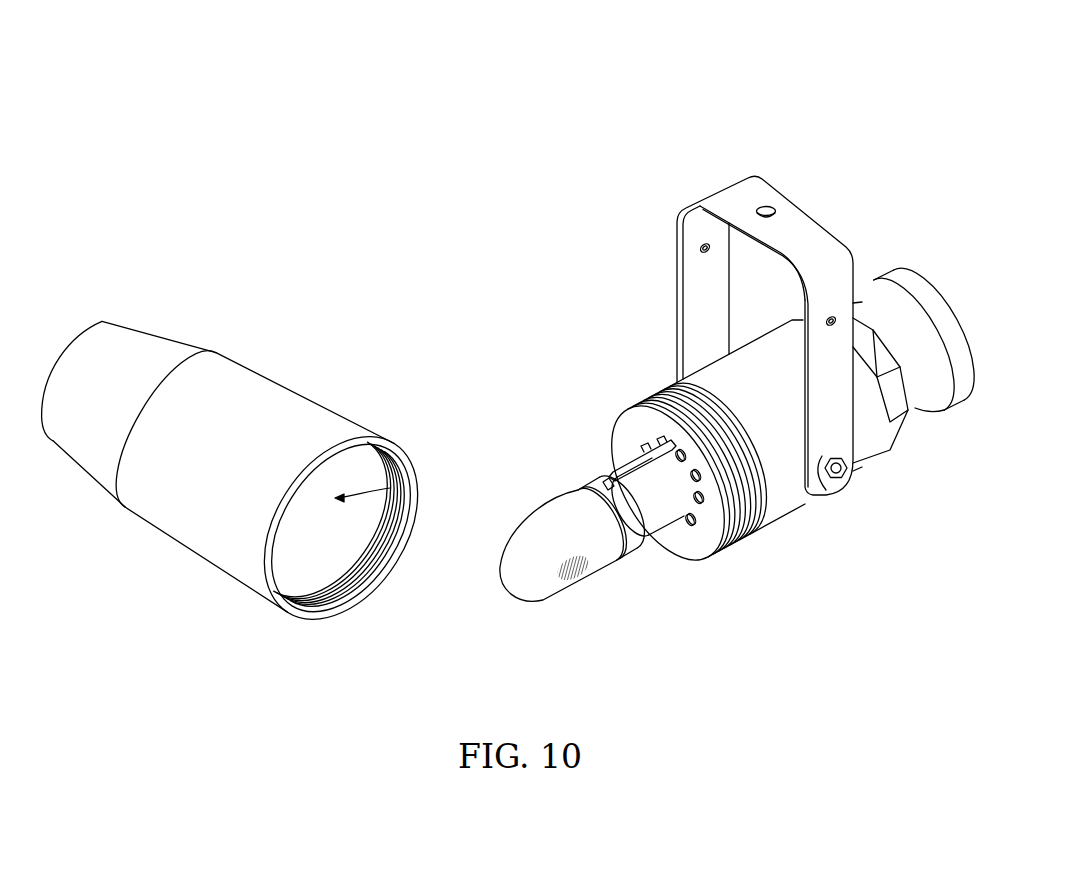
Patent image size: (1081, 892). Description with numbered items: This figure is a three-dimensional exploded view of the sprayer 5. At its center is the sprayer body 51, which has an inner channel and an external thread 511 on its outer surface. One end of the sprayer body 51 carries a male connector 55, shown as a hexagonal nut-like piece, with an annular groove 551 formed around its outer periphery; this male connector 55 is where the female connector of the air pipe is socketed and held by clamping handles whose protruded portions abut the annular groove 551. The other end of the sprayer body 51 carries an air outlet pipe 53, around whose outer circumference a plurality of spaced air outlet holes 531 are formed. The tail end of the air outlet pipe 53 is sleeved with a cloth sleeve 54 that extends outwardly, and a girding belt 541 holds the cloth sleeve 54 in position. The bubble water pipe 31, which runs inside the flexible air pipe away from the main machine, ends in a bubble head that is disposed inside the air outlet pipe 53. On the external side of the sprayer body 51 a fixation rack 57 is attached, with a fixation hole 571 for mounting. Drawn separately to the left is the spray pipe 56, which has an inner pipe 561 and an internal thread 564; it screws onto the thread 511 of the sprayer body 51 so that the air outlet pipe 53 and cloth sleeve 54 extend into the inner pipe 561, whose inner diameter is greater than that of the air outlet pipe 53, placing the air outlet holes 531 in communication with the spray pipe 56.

The sprayer 5 is at (862, 525).
The bubble water pipe 31 is at (615, 476).
The sprayer body 51 is at (786, 496).
The thread 511 is at (671, 383).
The air outlet pipe 53 is at (661, 512).
The air outlet holes 531 is at (645, 440).
The cloth sleeve 54 is at (592, 578).
The girding belt 541 is at (590, 484).
The male connector 55 is at (915, 410).
The annular groove 551 is at (947, 385).
The spray pipe 56 is at (241, 376).
The inner pipe 561 is at (399, 464).
The thread 564 is at (352, 612).
The fixation rack 57 is at (857, 273).
The fixation hole 571 is at (768, 207).